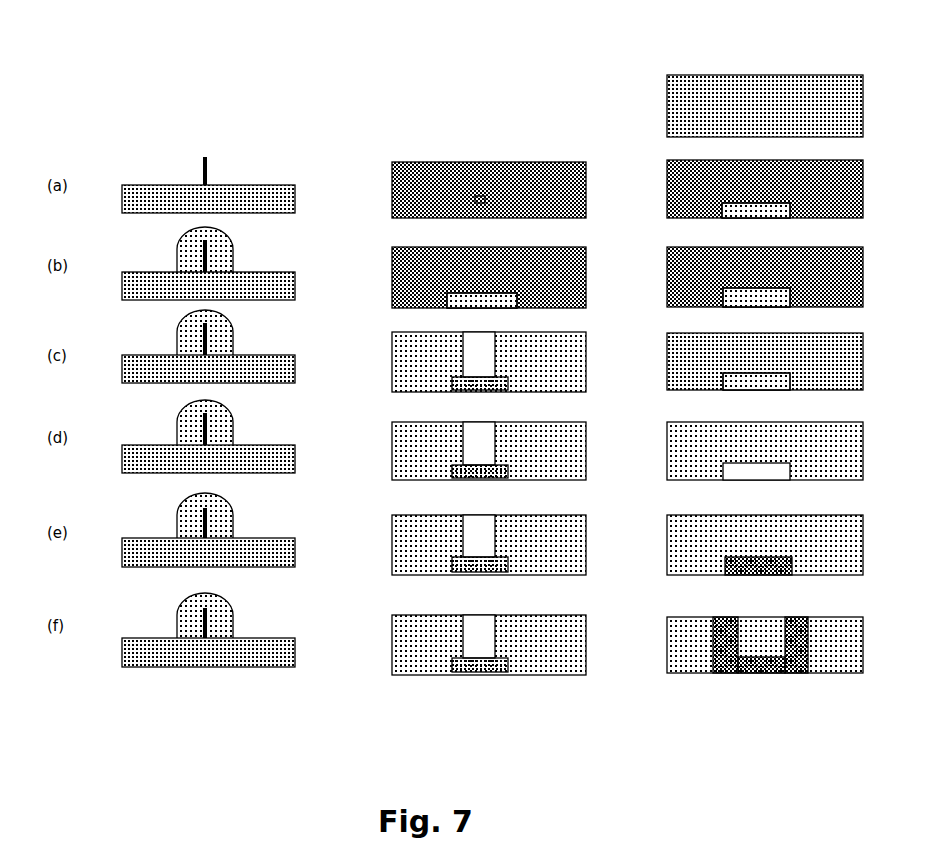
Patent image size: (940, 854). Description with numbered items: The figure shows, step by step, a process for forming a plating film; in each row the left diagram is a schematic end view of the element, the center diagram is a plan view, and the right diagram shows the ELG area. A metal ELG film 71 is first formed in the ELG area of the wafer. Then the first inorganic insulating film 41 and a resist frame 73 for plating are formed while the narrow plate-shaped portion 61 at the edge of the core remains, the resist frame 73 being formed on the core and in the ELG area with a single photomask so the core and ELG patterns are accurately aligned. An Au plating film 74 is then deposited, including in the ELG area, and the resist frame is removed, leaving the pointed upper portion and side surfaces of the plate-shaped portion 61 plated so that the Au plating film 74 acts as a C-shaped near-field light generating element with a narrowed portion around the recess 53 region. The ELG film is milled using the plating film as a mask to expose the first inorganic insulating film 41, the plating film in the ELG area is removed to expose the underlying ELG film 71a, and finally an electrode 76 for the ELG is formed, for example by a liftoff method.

The first inorganic insulating film 41 is at (504, 413).
The plate-shaped portion 61 is at (331, 388).
The Au plating film 74 is at (466, 451).
The resist frame 73 is at (647, 222).
The ELG film 71 is at (777, 218).
The underlying ELG film 71a is at (775, 628).
The recess 53 is at (473, 475).
The electrode 76 is at (777, 645).